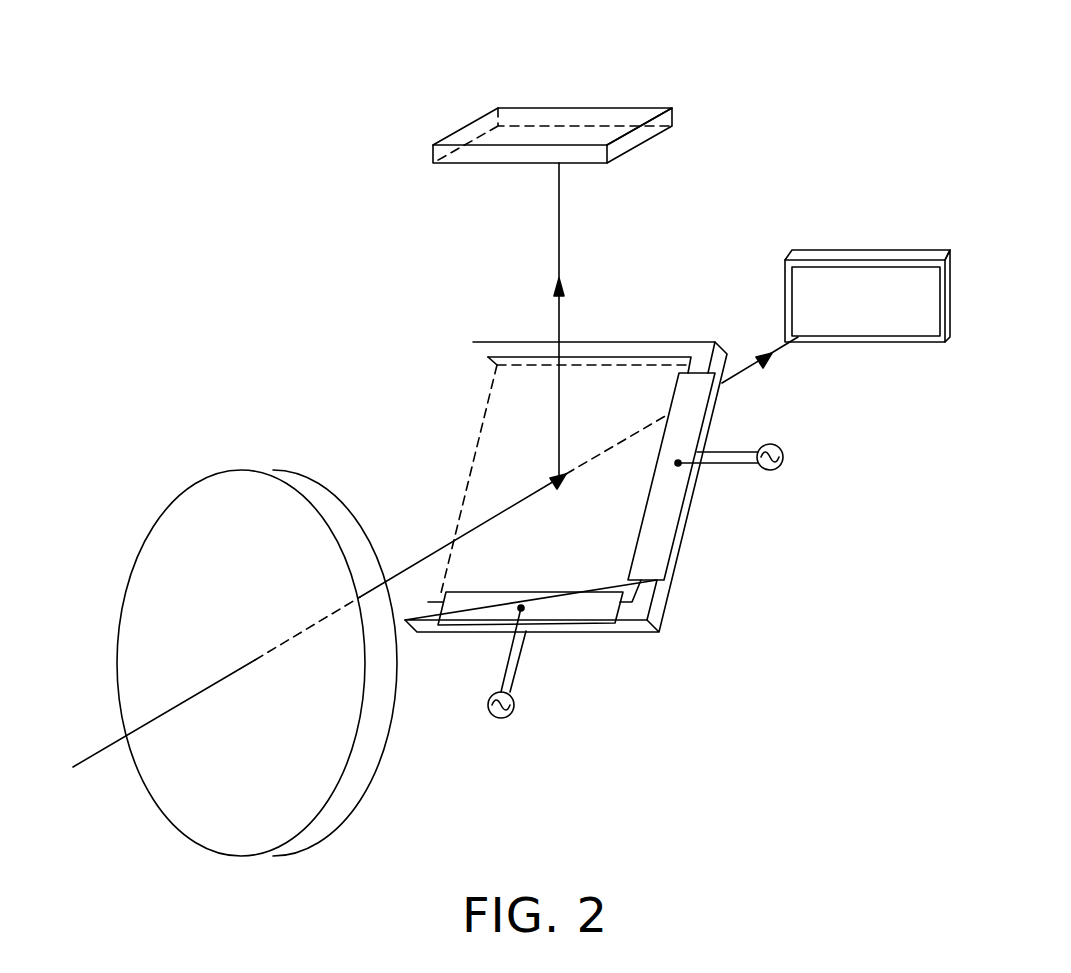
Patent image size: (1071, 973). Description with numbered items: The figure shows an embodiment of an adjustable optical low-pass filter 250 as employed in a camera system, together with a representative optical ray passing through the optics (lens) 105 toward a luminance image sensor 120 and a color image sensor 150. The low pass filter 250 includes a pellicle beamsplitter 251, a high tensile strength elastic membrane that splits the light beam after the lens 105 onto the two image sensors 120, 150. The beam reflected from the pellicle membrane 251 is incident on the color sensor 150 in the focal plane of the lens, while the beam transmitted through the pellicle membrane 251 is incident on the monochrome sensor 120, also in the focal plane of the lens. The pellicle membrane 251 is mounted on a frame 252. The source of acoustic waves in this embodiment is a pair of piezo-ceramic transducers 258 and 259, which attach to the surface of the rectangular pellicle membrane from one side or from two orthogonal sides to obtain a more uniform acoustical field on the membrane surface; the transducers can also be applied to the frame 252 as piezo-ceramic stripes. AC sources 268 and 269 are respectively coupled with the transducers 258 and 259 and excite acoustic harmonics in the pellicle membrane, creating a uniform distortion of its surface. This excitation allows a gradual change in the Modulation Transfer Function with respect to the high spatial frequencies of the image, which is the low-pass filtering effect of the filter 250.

The optics (lens) 105 is at (300, 853).
The luminance image sensor 120 is at (853, 257).
The color image sensor 150 is at (560, 117).
The adjustable optical low-pass filter 250 is at (512, 339).
The pellicle beamsplitter 251 is at (500, 432).
The frame 252 is at (452, 460).
The piezo-ceramic transducer 258 is at (588, 612).
The piezo-ceramic transducer 259 is at (663, 517).
The AC source 268 is at (514, 711).
The AC source 269 is at (783, 467).